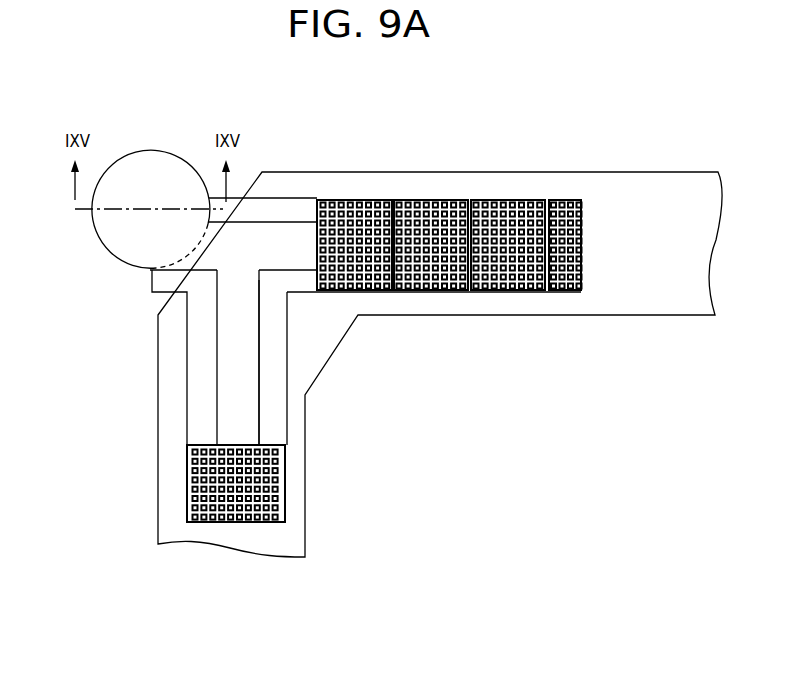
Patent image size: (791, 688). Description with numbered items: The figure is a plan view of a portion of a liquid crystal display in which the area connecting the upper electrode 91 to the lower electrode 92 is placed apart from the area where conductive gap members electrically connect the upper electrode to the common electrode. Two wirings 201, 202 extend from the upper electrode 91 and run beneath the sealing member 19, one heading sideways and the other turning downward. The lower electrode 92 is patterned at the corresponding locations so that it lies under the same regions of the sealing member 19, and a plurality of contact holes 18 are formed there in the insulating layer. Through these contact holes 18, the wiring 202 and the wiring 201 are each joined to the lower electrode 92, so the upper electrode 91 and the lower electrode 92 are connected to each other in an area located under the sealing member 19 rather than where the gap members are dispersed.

The contact holes 18 is at (407, 363).
The sealing member 19 is at (440, 364).
The upper electrode 91 is at (139, 167).
The lower electrode 92 is at (328, 405).
The wiring 201 is at (228, 382).
The wiring 202 is at (293, 174).